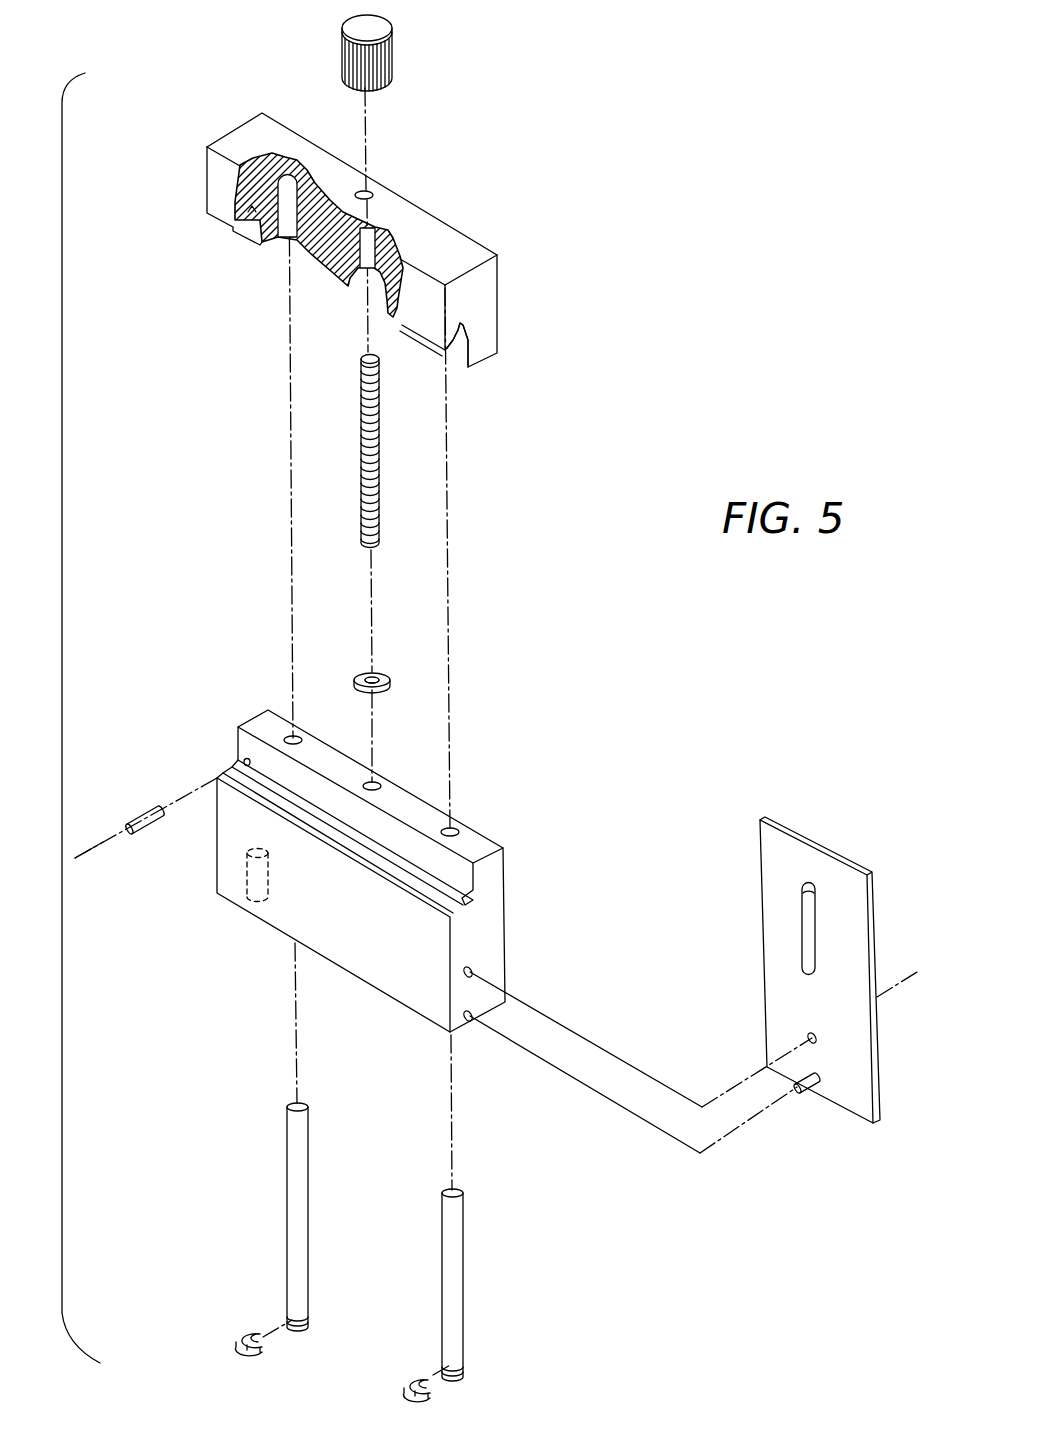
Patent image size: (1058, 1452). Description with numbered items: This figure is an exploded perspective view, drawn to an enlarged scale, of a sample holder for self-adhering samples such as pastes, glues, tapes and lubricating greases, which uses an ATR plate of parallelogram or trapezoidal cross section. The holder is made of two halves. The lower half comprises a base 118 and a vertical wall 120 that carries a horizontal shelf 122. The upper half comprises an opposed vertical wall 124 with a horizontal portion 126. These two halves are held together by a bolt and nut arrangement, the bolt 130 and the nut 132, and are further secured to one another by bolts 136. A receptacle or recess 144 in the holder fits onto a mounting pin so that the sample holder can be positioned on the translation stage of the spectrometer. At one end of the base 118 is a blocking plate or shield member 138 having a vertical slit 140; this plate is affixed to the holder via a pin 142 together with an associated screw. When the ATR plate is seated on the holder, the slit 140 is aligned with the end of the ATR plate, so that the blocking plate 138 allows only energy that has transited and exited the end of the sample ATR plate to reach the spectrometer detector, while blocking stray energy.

The base 118 is at (217, 865).
The vertical wall 120 is at (500, 843).
The horizontal shelf 122 is at (477, 907).
The opposed vertical wall 124 is at (483, 307).
The horizontal portion 126 is at (462, 353).
The bolt 130 is at (375, 466).
The nut 132 is at (390, 55).
The bolts 136 is at (457, 1253).
The blocking plate or shield member 138 is at (858, 1082).
The vertical slit 140 is at (813, 887).
The pin 142 is at (803, 1095).
The receptacle or recess 144 is at (235, 902).